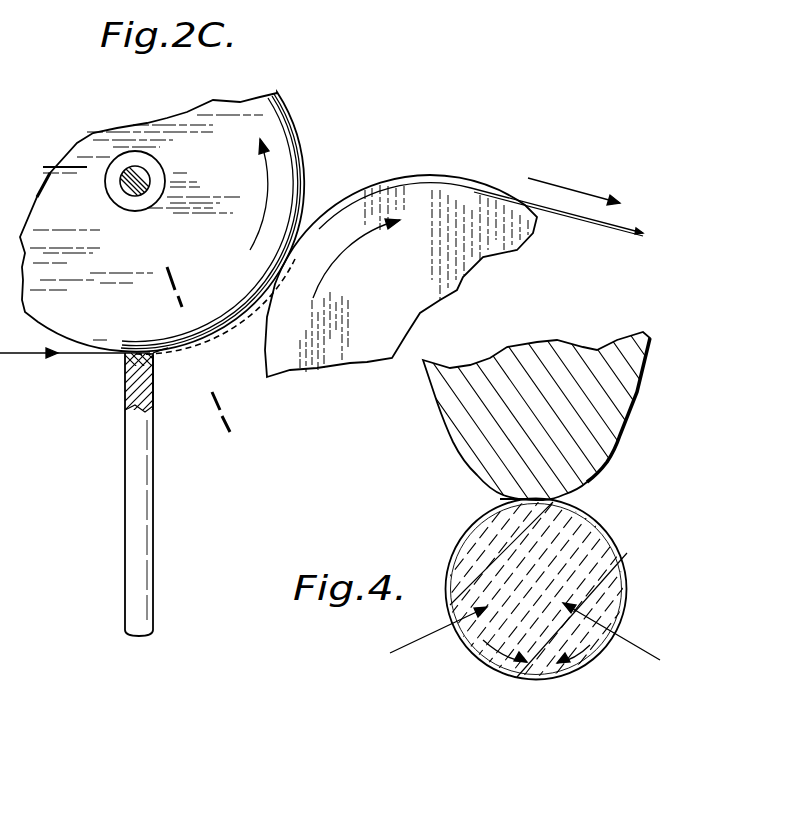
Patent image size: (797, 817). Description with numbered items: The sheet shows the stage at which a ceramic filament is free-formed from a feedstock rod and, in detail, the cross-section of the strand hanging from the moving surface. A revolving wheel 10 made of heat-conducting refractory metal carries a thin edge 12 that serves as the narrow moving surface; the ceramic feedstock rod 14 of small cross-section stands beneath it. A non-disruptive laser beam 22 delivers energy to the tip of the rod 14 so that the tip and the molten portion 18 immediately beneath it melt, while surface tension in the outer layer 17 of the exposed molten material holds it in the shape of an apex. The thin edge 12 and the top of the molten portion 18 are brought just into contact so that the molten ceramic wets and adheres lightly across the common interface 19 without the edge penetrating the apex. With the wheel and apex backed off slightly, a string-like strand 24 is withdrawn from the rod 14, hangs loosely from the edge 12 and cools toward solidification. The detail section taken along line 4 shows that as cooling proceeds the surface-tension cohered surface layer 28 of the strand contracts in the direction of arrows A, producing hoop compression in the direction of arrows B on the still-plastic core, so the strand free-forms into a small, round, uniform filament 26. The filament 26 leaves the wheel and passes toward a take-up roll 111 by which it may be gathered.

In FIG. 2C, the revolving wheel 10 is at (297, 112).
In FIG. 4, the revolving wheel 10 is at (645, 385).
In FIG. 2C, the thin edge of the revolving wheel 12 is at (305, 170).
In FIG. 4, the thin edge of the revolving wheel 12 is at (613, 450).
In FIG. 2C, the section line 4- 4 is at (254, 416).
In FIG. 2C, the laser beam 22 is at (20, 360).
In FIG. 2C, the ceramic feedstock rod 14 is at (157, 598).
In FIG. 2C, the outer layer of the molten portion 17 is at (120, 357).
In FIG. 2C, the molten portion 18 is at (157, 367).
In FIG. 2C, the strand 24 is at (157, 357).
In FIG. 2C, the common interface 19 is at (138, 352).
In FIG. 4, the common interface 19 is at (510, 500).
In FIG. 2C, the ceramic filament 26 is at (240, 320).
In FIG. 4, the ceramic filament 26 is at (617, 553).
In FIG. 2C, the take-up roll 111 is at (462, 280).
In FIG. 4, the surface-tension cohered surface layer of the strand 28 is at (463, 652).
In FIG. 4, the vector arrows A is at (593, 653).
In FIG. 4, the vector arrows B is at (637, 635).